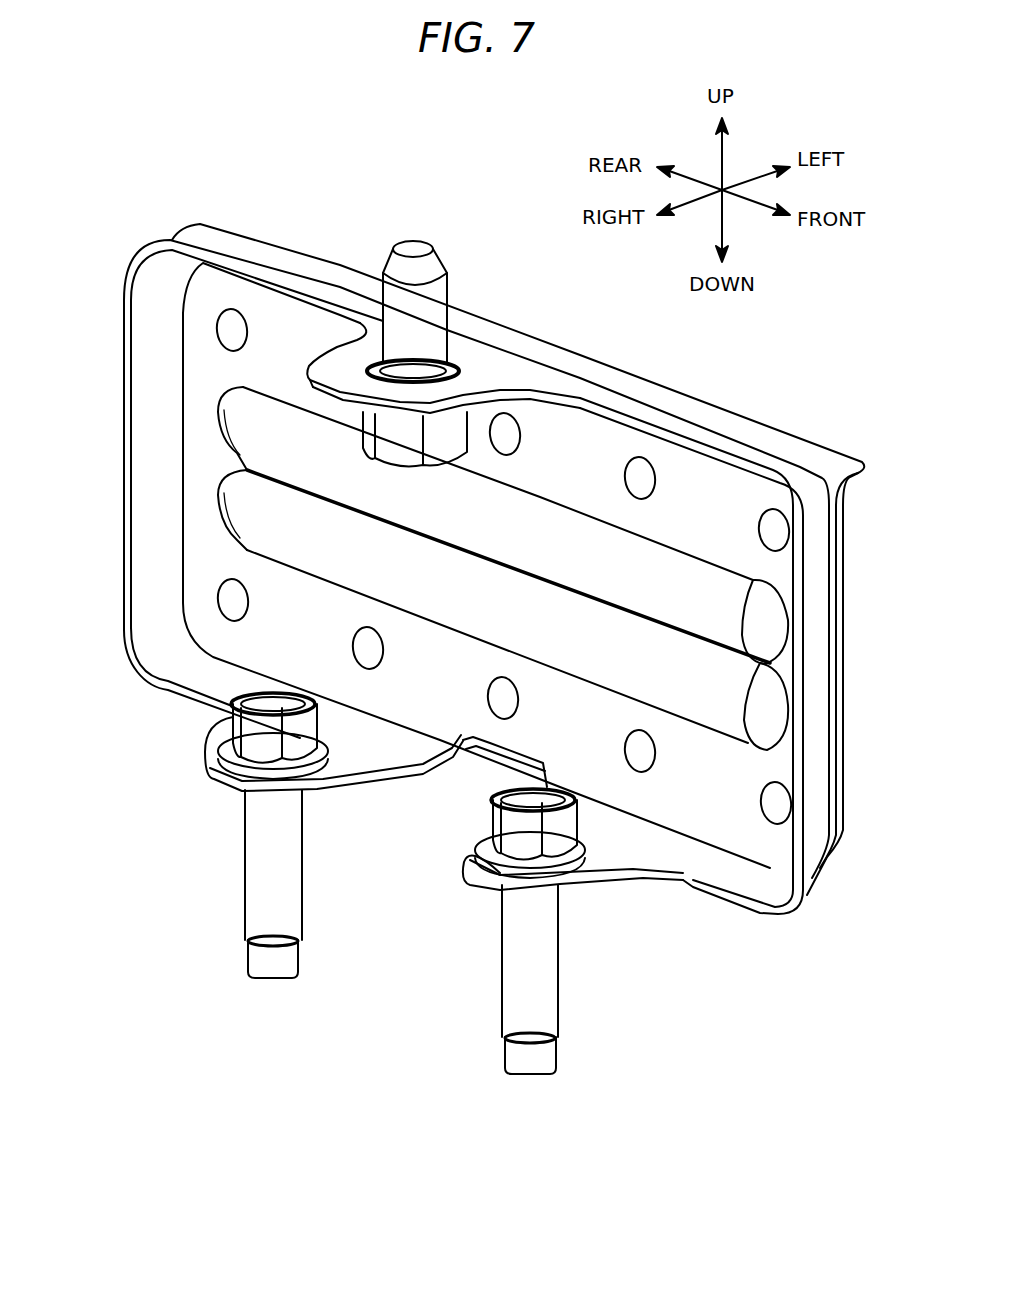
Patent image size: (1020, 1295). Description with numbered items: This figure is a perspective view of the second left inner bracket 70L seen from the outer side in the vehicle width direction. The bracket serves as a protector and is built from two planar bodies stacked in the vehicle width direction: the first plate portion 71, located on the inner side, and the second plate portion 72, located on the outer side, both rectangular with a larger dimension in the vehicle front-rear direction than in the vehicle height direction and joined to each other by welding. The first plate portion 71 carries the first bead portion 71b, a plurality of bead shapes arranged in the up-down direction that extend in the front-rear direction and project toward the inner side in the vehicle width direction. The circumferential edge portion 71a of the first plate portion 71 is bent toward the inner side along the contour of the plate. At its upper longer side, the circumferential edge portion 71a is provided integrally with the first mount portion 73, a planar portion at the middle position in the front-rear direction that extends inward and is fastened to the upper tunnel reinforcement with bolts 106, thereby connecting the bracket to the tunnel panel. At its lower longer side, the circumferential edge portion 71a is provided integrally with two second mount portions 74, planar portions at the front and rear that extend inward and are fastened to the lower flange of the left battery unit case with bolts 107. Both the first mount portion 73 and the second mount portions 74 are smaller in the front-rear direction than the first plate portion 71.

The second left inner bracket 70L is at (128, 193).
The first plate portion 71 is at (193, 577).
The circumferential edge portion 71a is at (150, 410).
The first bead portion 71b is at (722, 628).
The second plate portion 72 is at (755, 420).
The first mount portion 73 is at (480, 375).
The second mount portion 74 is at (356, 746).
The bolt 106 is at (416, 236).
The bolt 107 is at (272, 982).